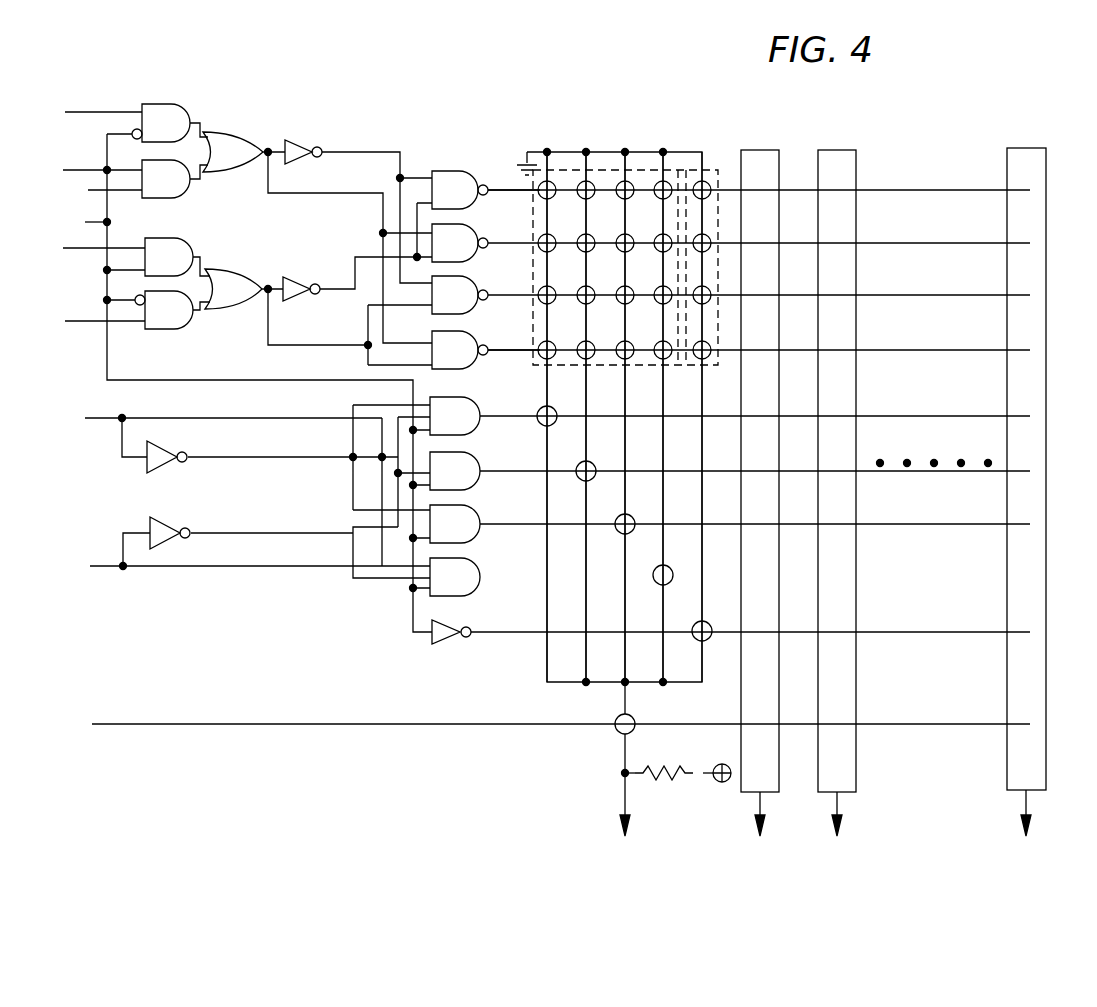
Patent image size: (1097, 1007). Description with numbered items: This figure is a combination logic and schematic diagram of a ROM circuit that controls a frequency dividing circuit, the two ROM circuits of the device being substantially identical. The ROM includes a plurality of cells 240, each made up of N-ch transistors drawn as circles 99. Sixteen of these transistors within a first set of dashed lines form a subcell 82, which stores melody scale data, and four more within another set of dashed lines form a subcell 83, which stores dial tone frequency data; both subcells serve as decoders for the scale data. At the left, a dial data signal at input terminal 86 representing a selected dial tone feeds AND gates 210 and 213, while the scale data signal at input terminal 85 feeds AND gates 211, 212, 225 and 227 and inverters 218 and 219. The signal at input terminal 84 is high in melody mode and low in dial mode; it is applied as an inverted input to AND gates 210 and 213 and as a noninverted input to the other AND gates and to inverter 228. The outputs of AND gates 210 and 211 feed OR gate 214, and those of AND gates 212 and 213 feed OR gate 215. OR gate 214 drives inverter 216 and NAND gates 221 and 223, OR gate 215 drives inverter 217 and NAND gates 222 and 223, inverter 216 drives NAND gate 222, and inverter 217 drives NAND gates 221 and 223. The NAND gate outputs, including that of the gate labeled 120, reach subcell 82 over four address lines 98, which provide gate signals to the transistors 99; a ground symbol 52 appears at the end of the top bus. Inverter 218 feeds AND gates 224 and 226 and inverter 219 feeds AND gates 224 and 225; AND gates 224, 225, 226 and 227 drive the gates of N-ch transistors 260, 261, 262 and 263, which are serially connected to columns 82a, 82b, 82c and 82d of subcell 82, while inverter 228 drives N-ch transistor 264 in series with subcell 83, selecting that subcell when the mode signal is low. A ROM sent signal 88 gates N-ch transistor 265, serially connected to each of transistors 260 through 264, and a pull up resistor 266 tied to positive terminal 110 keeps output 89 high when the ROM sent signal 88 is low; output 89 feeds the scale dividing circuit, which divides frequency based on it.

The input terminal 86 is at (88, 112).
The input terminal 85 is at (88, 190).
The input terminal 84 is at (88, 222).
The AND gate 210 is at (182, 93).
The AND gate 211 is at (177, 190).
The AND gate 212 is at (180, 248).
The AND gate 213 is at (175, 320).
The OR gate 214 is at (210, 140).
The OR gate 215 is at (237, 277).
The inverter 216 is at (293, 140).
The inverter 217 is at (293, 300).
The NAND gate 120 is at (450, 180).
The NAND gate 221 is at (458, 228).
The NAND gate 222 is at (462, 278).
The NAND gate 223 is at (458, 353).
The address lines 98 is at (519, 197).
The ground connection 52 is at (535, 150).
The column 82a is at (548, 152).
The column 82b is at (585, 152).
The column 82c is at (626, 152).
The column 82d is at (660, 152).
The subcell 82 is at (614, 170).
The subcell 83 is at (695, 168).
The N-ch transistors 99 is at (708, 170).
The cell 240 is at (1023, 150).
The inverter 218 is at (162, 447).
The inverter 219 is at (163, 519).
The AND gate 224 is at (460, 424).
The AND gate 225 is at (460, 478).
The AND gate 226 is at (460, 533).
The AND gate 227 is at (458, 580).
The inverter 228 is at (444, 638).
The N-ch transistor 260 is at (549, 410).
The N-ch transistor 261 is at (600, 456).
The N-ch transistor 262 is at (640, 508).
The N-ch transistor 263 is at (680, 558).
The N-ch transistor 264 is at (718, 614).
The N-ch transistor 265 is at (611, 731).
The pull up resistor 266 is at (682, 765).
The positive terminal 110 is at (727, 758).
The ROM sent signal 88 is at (98, 724).
The output 89 is at (758, 812).